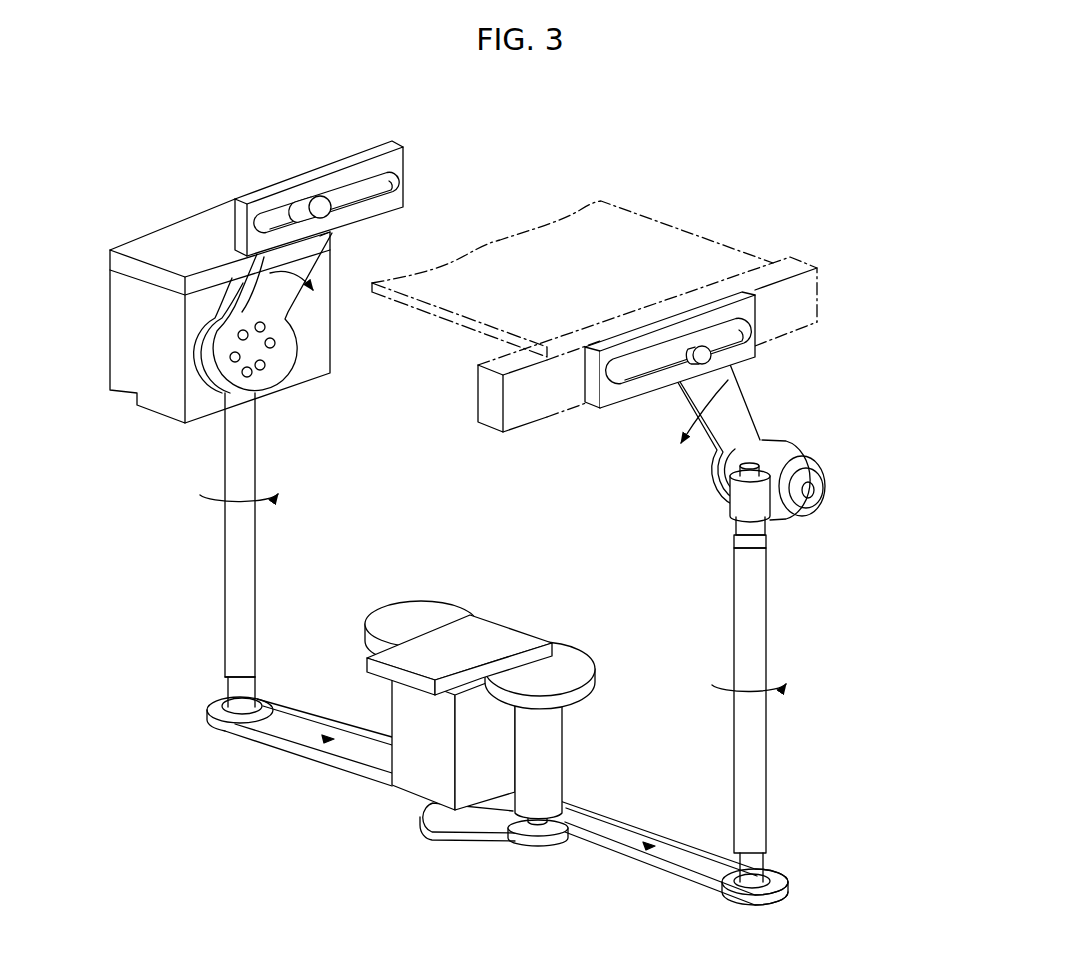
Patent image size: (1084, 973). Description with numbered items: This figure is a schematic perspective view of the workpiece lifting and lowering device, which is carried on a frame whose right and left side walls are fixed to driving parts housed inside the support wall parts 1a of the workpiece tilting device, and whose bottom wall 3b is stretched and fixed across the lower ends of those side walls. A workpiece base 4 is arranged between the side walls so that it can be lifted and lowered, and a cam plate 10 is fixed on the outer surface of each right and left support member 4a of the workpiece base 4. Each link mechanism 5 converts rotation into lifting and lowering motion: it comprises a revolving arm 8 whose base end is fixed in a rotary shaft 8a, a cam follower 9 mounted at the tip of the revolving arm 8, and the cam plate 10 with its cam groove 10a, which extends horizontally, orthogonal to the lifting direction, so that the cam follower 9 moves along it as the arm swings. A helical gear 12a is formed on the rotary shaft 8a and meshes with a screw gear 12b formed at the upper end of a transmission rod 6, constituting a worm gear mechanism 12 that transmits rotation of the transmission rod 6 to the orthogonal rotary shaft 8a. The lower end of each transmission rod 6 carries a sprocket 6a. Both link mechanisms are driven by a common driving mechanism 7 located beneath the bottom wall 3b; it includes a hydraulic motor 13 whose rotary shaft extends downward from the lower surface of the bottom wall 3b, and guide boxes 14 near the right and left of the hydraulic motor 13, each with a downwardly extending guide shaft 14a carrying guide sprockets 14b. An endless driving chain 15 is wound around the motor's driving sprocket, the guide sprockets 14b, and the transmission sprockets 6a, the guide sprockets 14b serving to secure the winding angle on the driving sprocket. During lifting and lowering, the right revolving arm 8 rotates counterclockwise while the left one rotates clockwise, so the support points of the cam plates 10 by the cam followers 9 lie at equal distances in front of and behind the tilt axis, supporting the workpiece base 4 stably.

The support wall part 1a is at (150, 417).
The bottom wall 3b is at (440, 827).
The workpiece base 4 is at (665, 217).
The support member 4a is at (477, 388).
The link mechanism 5 is at (683, 506).
The transmission rod 6 is at (225, 560).
The sprocket 6a is at (262, 702).
The driving mechanism 7 is at (405, 825).
The revolving arm 8 is at (297, 310).
The rotary shaft 8a is at (816, 472).
The cam follower 9 is at (316, 201).
The cam plate 10 is at (297, 170).
The cam groove 10a is at (362, 183).
The worm gear mechanism 12 is at (817, 547).
The helical gear 12a is at (757, 505).
The screw gear 12b is at (768, 515).
The hydraulic motor 13 is at (378, 782).
The guide box 14 is at (412, 608).
The guide shaft 14a is at (543, 828).
The guide sprocket 14b is at (522, 838).
The driving chain 15 is at (293, 742).